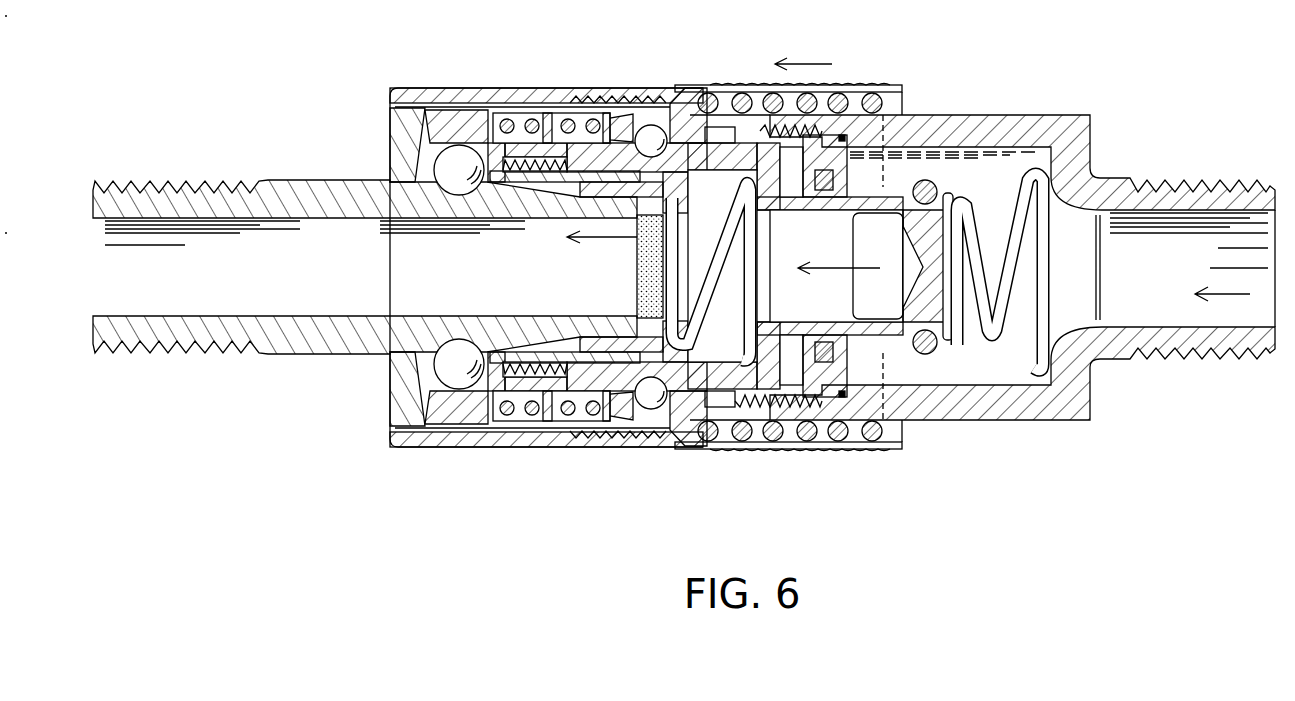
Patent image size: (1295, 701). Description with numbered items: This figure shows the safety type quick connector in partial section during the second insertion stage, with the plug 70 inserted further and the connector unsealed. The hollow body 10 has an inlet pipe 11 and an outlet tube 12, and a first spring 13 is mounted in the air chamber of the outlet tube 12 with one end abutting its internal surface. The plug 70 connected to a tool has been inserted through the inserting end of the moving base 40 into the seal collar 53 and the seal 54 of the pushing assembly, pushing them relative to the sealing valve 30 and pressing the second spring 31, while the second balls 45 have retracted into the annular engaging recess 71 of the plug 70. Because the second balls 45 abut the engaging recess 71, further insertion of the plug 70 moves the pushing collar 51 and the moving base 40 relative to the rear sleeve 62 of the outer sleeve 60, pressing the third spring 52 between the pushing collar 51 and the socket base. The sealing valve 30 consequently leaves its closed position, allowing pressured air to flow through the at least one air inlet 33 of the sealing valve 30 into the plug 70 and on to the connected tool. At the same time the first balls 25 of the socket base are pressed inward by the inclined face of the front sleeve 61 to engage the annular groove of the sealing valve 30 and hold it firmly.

The body 10 is at (973, 280).
The inlet pipe 11 is at (1229, 335).
The outlet tube 12 is at (981, 303).
The first spring 13 is at (1043, 300).
The first balls 25 is at (652, 400).
The sealing valve 30 is at (732, 397).
The second spring 31 is at (714, 266).
The air inlet 33 is at (868, 304).
The moving base 40 is at (504, 269).
The second balls 45 is at (458, 372).
The pushing collar 51 is at (480, 405).
The third spring 52 is at (563, 121).
The seal collar 53 is at (543, 362).
The seal 54 is at (595, 338).
The outer sleeve 60 is at (756, 225).
The front sleeve 61 is at (688, 98).
The rear sleeve 62 is at (487, 95).
The plug 70 is at (279, 152).
The annular engaging recess 71 is at (458, 190).